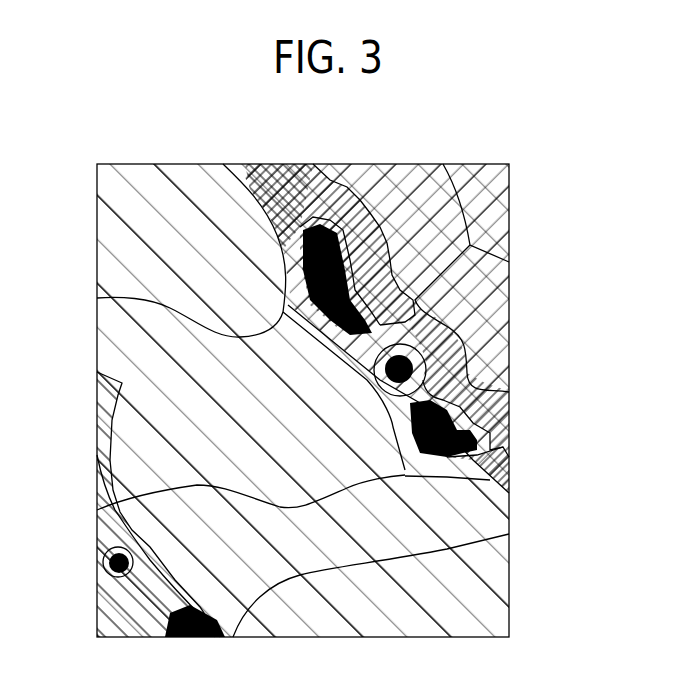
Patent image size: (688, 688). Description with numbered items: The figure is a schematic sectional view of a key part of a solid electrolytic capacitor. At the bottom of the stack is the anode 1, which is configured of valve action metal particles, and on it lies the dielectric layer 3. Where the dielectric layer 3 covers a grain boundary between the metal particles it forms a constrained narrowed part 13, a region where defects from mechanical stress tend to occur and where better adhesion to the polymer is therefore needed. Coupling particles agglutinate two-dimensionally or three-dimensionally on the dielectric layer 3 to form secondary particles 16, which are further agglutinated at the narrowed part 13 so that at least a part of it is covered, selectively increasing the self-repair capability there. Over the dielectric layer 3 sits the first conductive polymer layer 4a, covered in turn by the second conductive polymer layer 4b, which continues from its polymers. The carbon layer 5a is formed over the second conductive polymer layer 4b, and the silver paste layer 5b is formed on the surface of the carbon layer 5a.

The anode 1 is at (497, 575).
The dielectric layer 3 is at (110, 431).
The first conductive polymer layer 4a is at (507, 463).
The second conductive polymer layer 4b is at (505, 424).
The carbon layer 5a is at (500, 313).
The silver paste layer 5b is at (500, 198).
The narrowed part 13 is at (97, 298).
The secondary particles 16 is at (313, 217).